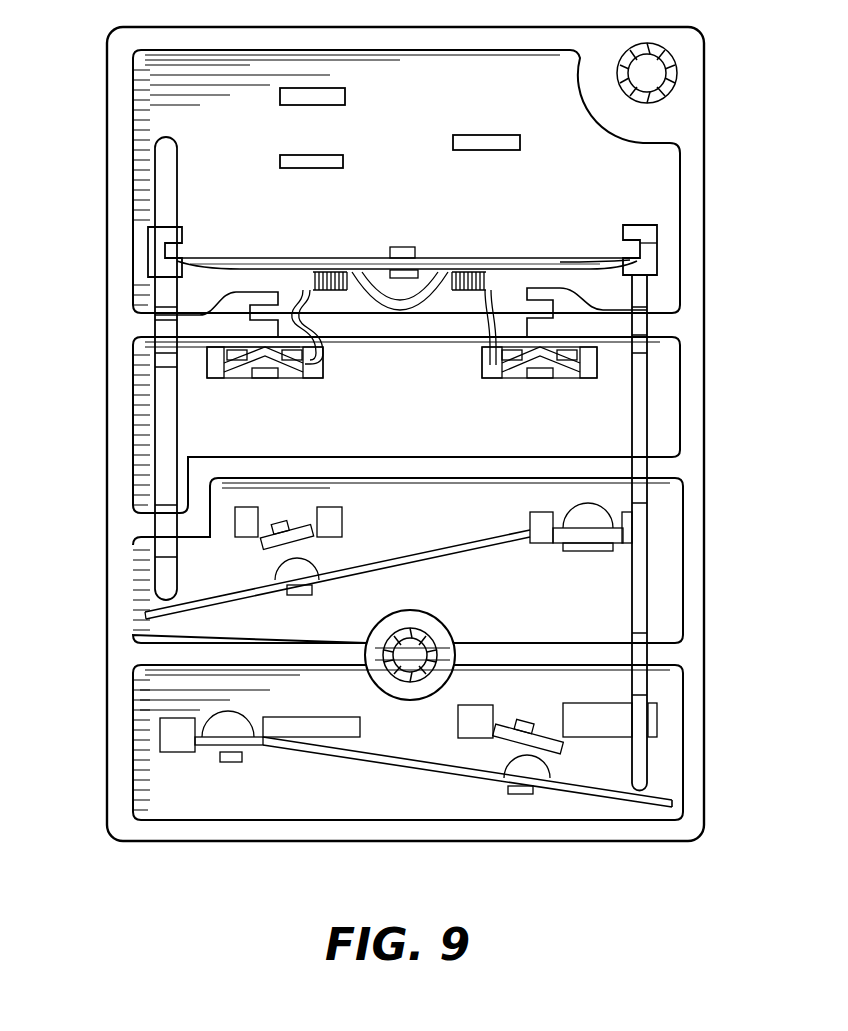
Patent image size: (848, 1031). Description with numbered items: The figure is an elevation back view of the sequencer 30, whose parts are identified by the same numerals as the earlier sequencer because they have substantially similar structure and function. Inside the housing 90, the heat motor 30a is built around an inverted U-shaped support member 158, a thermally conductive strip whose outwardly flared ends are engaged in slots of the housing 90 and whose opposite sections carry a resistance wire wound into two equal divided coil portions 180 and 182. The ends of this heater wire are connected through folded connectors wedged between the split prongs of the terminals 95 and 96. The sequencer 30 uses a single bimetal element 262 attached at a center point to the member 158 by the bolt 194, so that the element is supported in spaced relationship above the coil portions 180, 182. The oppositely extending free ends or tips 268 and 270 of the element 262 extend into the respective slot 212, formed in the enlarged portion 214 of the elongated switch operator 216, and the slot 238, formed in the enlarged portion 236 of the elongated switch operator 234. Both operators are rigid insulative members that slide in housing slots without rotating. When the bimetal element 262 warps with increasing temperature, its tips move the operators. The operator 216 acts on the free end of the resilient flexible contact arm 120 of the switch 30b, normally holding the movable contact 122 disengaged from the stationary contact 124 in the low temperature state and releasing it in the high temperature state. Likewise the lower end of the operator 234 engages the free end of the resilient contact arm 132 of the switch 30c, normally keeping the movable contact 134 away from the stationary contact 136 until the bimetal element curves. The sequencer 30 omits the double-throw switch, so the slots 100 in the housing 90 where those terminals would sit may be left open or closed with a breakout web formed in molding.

The sequencer 30 is at (108, 48).
The housing 90 is at (112, 114).
The slots 100 is at (325, 160).
The elongated switch operator 234 is at (157, 426).
The enlarged portion 236 is at (150, 272).
The slot 238 is at (185, 242).
The elongated switch operator 216 is at (632, 410).
The transverse slot 212 is at (623, 243).
The enlarged portion 214 is at (655, 262).
The free end 270 is at (222, 258).
The single bimetal element 262 is at (502, 258).
The free end 268 is at (590, 256).
The heat motor 30a is at (410, 383).
The coil portion 182 is at (340, 291).
The coil portion 180 is at (466, 291).
The bolt 194 is at (400, 279).
The inverted U-shaped member 158 is at (297, 302).
The terminal 96 is at (236, 380).
The terminal 95 is at (512, 380).
The switch 30c is at (388, 561).
The resilient contact arm 132 is at (406, 556).
The stationary contact 136 is at (278, 553).
The movable contact 134 is at (292, 577).
The switch 30b is at (416, 758).
The resilient flexible contact arm 120 is at (420, 768).
The stationary contact 124 is at (497, 745).
The movable contact 122 is at (543, 763).